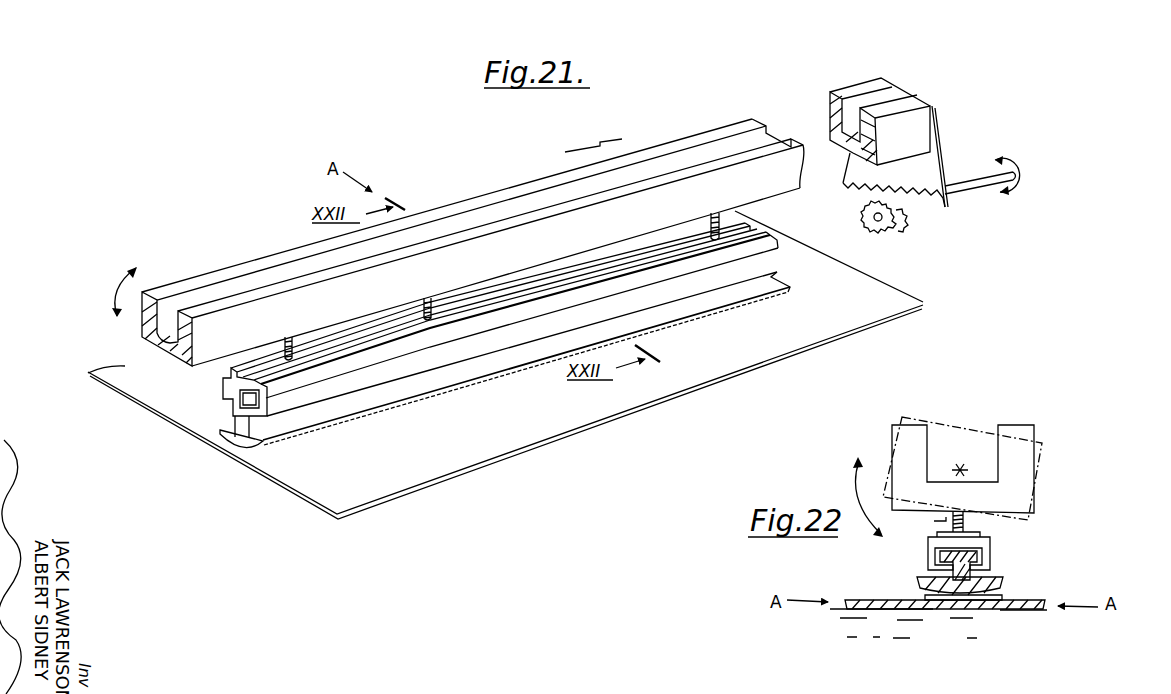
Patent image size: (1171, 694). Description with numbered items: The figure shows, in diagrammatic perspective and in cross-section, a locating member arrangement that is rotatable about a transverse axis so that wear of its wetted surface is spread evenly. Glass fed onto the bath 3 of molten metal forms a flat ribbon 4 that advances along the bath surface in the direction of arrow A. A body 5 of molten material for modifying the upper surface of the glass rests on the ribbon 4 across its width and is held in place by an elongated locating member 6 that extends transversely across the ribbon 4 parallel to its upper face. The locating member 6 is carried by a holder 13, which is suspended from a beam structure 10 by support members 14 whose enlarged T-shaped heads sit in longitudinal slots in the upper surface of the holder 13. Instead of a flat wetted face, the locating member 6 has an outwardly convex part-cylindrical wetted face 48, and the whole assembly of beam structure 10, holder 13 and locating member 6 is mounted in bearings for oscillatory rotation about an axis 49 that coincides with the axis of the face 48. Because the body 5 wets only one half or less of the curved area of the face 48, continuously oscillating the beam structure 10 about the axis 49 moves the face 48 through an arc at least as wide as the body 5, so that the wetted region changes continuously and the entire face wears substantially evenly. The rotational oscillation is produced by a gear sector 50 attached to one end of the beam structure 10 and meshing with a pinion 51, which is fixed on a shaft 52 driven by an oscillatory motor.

In FIG. 22, the bath 3 is at (961, 632).
In FIG. 22, the ribbon of glass 4 is at (1034, 601).
In FIG. 21, the body of molten material 5 is at (246, 448).
In FIG. 22, the body of molten material 5 is at (1002, 597).
In FIG. 21, the locating member 6 is at (230, 414).
In FIG. 22, the locating member 6 is at (988, 578).
In FIG. 21, the beam structure 10 is at (508, 189).
In FIG. 22, the beam structure 10 is at (931, 466).
In FIG. 21, the holder 13 is at (222, 381).
In FIG. 22, the holder 13 is at (928, 545).
In FIG. 21, the support members 14 is at (300, 334).
In FIG. 22, the support members 14 is at (966, 516).
In FIG. 21, the part-cylindrical wetted face 48 is at (258, 449).
In FIG. 22, the part-cylindrical wetted face 48 is at (920, 589).
In FIG. 22, the axis 49 is at (966, 470).
In FIG. 21, the gear sector 50 is at (930, 160).
In FIG. 21, the pinion 51 is at (893, 225).
In FIG. 21, the shaft 52 is at (979, 186).